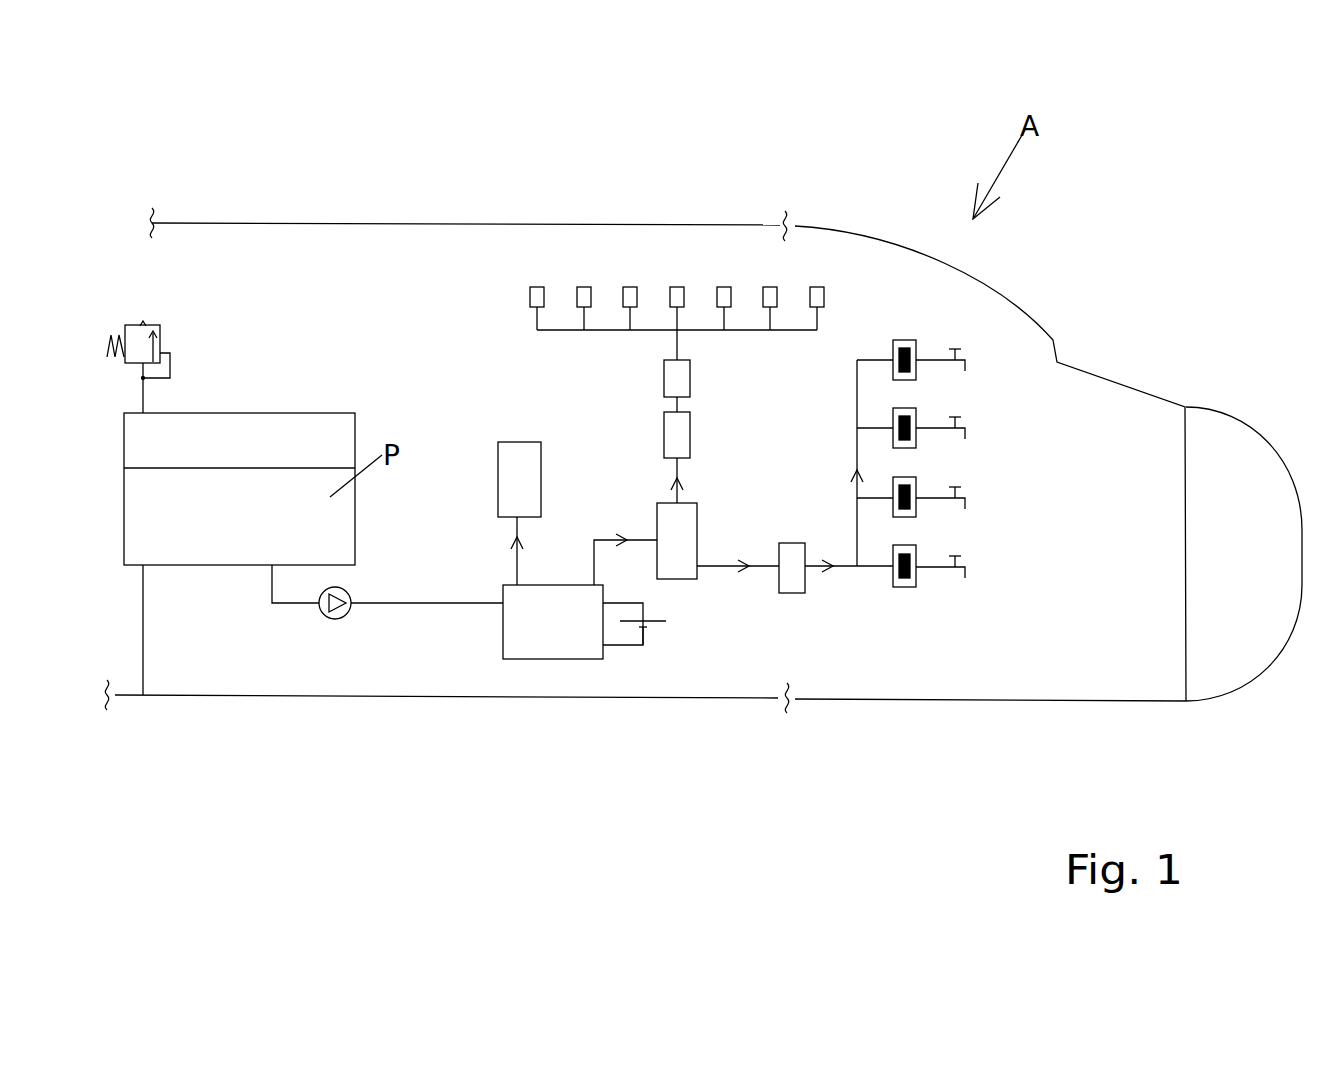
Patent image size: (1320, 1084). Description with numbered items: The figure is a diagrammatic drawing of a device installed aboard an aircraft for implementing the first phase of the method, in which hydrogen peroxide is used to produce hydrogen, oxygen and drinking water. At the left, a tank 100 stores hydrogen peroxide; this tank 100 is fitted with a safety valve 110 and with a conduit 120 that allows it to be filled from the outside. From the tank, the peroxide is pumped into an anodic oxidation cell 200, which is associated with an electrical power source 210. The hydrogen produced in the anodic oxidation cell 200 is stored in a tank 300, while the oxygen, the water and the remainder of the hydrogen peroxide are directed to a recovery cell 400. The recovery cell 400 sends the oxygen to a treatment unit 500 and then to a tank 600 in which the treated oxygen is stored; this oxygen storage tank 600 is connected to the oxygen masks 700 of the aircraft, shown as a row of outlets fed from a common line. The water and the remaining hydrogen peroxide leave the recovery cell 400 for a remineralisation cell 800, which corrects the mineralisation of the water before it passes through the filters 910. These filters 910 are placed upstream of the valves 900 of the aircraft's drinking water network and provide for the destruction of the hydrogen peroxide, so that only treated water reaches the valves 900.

The tank 100 is at (262, 417).
The safety valve 110 is at (146, 336).
The conduit 120 is at (143, 620).
The anodic oxidation cell 200 is at (552, 647).
The electrical power source 210 is at (645, 642).
The tank 300 is at (506, 447).
The recovery cell 400 is at (687, 565).
The treatment unit 500 is at (686, 455).
The tank 600 is at (682, 370).
The oxygen masks 700 is at (672, 292).
The remineralisation cell 800 is at (792, 575).
The valves 900 is at (962, 565).
The filters 910 is at (910, 576).